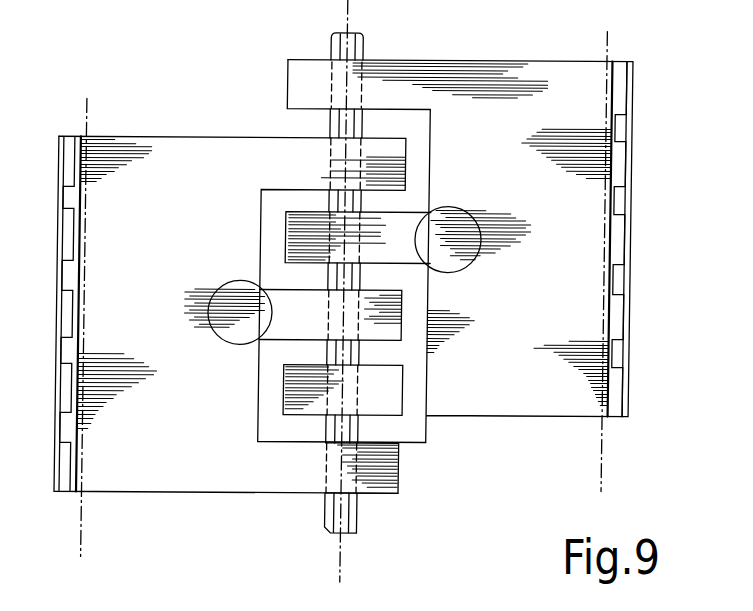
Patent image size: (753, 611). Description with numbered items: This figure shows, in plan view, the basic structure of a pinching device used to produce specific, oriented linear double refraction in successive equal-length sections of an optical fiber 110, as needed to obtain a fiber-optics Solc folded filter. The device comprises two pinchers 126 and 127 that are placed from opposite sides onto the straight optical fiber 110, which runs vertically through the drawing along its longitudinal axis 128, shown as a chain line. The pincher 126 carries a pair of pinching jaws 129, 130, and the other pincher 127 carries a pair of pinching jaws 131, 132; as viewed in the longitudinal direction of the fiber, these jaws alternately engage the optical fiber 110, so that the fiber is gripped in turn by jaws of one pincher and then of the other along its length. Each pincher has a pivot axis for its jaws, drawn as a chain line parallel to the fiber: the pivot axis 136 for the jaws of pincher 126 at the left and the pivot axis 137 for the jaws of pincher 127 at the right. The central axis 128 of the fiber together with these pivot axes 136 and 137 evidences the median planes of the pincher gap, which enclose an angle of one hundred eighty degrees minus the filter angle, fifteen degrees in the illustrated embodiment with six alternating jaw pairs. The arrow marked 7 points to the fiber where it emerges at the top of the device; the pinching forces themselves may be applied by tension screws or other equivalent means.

The hinge 7 is at (369, 32).
The optical fiber 110 is at (355, 513).
The pincher 126 is at (139, 138).
The pincher 127 is at (504, 59).
The longitudinal axis of optical fiber 128 is at (344, 554).
The pinching jaw 129 is at (402, 468).
The pinching jaw 130 is at (409, 469).
The pinching jaw 131 is at (285, 77).
The pinching jaw 132 is at (320, 277).
The pivot axis 136 is at (86, 512).
The pivot axis 137 is at (604, 454).